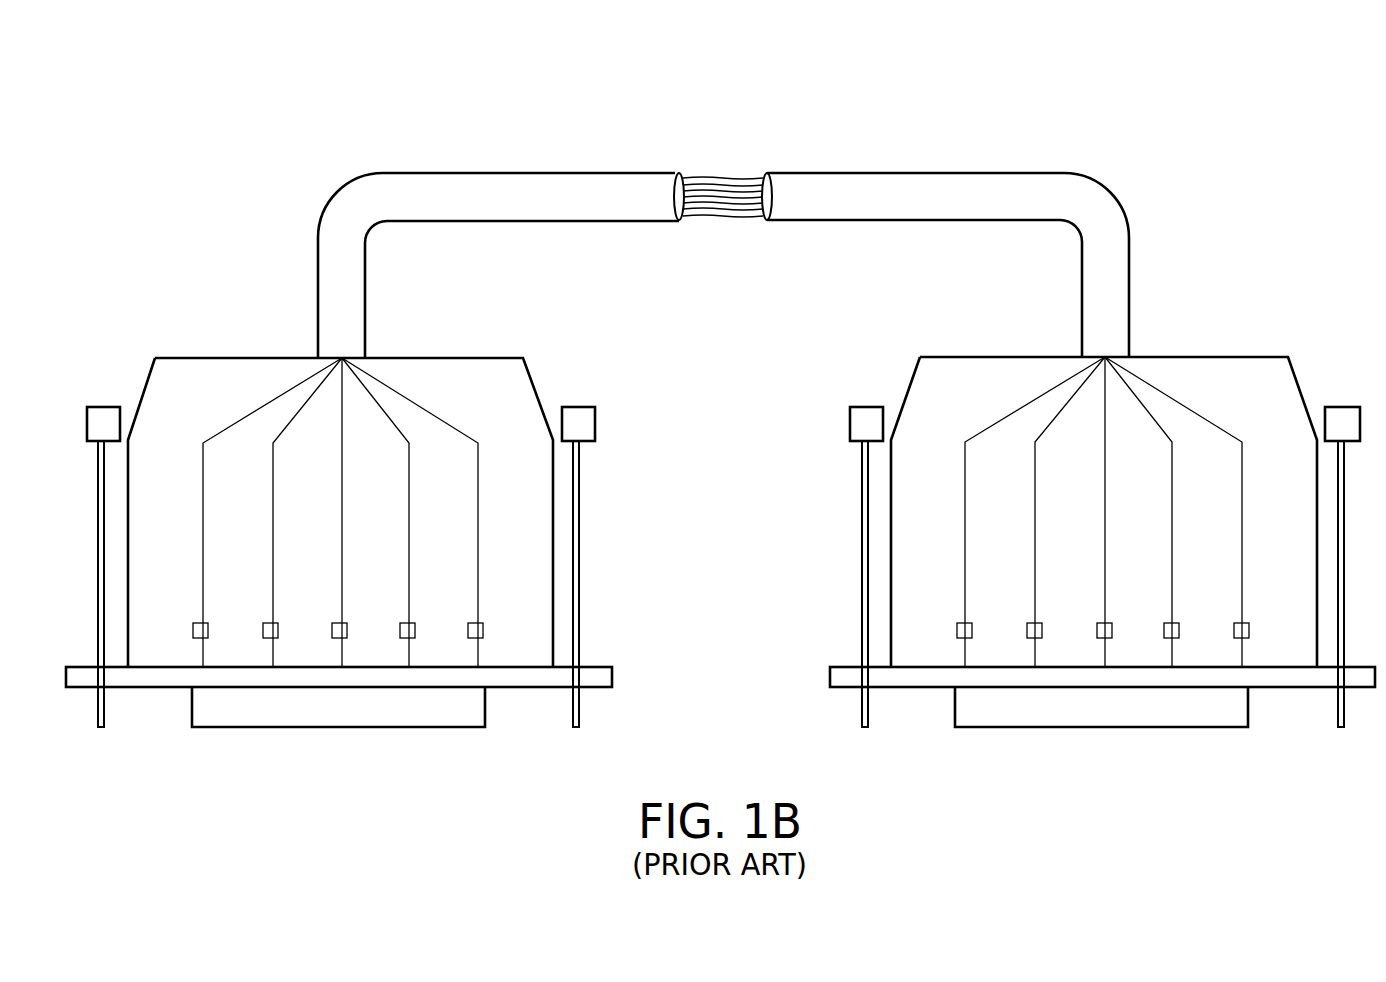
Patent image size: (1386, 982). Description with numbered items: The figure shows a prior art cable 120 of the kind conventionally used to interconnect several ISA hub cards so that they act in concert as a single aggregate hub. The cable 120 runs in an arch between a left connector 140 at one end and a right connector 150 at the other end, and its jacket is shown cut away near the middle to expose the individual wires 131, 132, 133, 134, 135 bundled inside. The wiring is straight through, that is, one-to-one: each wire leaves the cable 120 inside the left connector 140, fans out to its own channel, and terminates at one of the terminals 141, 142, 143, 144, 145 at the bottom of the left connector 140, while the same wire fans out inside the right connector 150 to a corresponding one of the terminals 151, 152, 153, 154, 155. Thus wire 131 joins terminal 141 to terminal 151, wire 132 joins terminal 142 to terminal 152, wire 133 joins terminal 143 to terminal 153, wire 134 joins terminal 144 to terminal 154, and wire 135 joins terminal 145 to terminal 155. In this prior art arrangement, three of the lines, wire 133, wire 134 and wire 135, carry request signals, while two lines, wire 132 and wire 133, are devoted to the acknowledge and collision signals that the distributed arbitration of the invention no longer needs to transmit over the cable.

The cable 120 is at (1043, 128).
The wire 131 is at (693, 172).
The wire 132 is at (738, 172).
The wire 133 is at (745, 215).
The wire 134 is at (727, 212).
The wire 135 is at (707, 220).
The left connector 140 is at (183, 356).
The terminal 141 is at (203, 663).
The terminal 142 is at (273, 663).
The terminal 143 is at (342, 663).
The terminal 144 is at (409, 663).
The terminal 145 is at (478, 663).
The right connector 150 is at (948, 356).
The terminal 151 is at (1242, 663).
The terminal 152 is at (1172, 663).
The terminal 153 is at (1105, 663).
The terminal 154 is at (1035, 663).
The terminal 155 is at (965, 663).